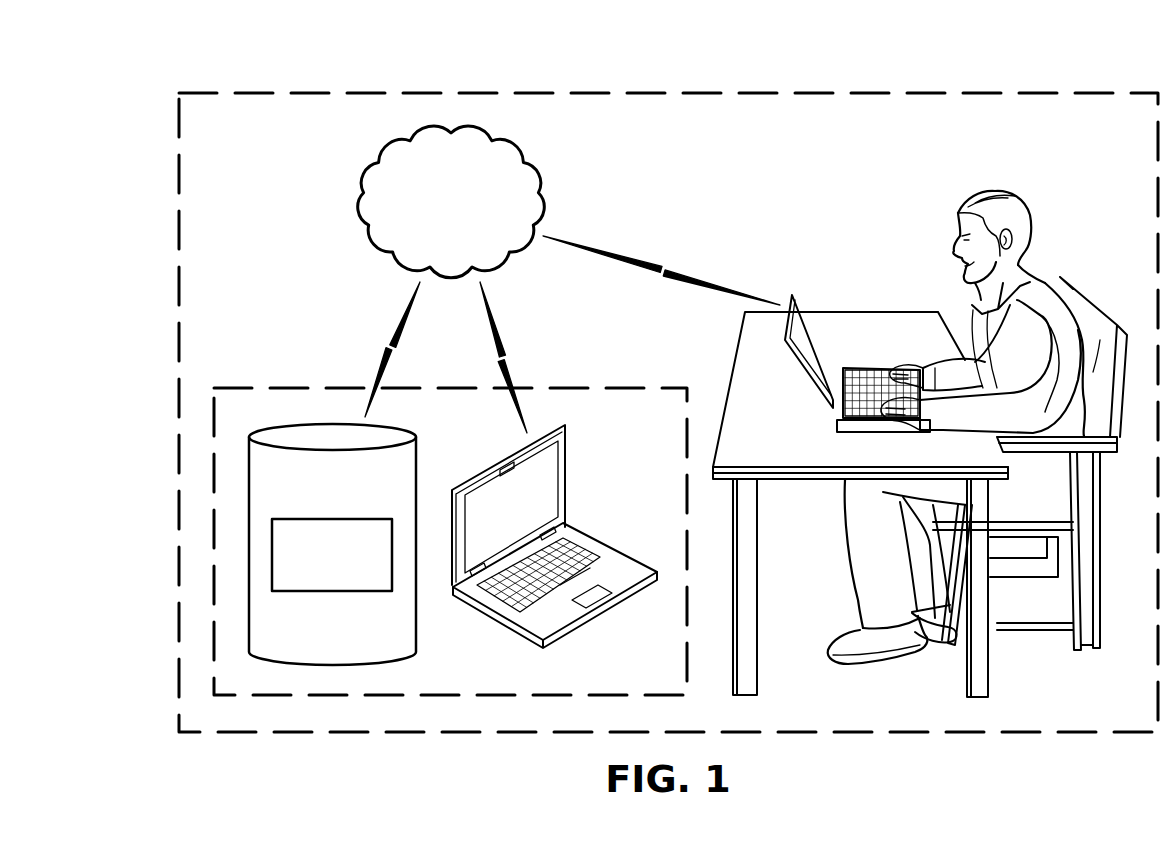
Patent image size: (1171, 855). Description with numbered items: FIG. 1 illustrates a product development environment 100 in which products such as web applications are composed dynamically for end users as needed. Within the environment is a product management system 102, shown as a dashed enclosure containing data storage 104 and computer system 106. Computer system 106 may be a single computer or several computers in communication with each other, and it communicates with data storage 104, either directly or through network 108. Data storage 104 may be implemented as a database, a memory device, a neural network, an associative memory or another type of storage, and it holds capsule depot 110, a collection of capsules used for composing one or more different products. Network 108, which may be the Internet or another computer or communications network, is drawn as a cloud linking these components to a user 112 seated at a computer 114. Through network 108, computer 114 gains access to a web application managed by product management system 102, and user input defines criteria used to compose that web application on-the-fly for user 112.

The product development environment 100 is at (471, 93).
The product management system 102 is at (302, 387).
The data storage 104 is at (355, 498).
The computer system 106 is at (600, 617).
The network 108 is at (428, 213).
The capsule depot 110 is at (333, 593).
The user 112 is at (998, 188).
The computer 114 is at (808, 383).